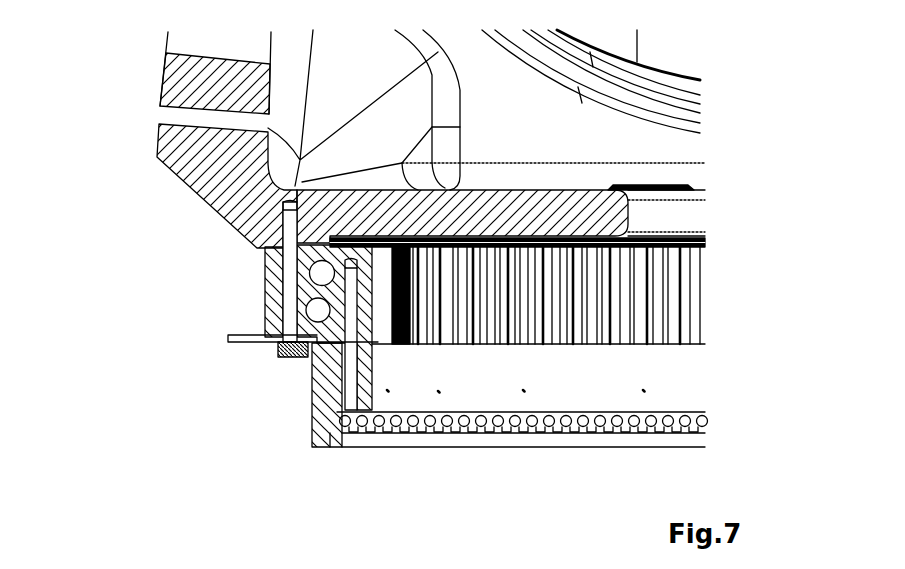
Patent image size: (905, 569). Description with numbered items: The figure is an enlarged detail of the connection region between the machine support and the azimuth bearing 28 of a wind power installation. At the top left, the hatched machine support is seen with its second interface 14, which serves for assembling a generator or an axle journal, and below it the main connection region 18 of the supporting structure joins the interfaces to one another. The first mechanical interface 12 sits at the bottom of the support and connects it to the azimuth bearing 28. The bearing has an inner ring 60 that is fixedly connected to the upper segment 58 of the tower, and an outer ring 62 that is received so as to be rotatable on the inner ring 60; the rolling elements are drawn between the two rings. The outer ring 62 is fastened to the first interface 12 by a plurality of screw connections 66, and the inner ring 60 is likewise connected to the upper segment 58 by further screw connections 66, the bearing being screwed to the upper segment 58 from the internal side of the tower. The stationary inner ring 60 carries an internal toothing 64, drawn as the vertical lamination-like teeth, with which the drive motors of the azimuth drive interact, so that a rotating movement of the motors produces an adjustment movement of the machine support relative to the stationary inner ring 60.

The first mechanical interface 12 is at (546, 235).
The second interface 14 is at (162, 80).
The main connection region 18 is at (233, 188).
The azimuth bearing 28 is at (271, 357).
The upper segment 58 is at (315, 382).
The inner ring 60 is at (323, 333).
The outer ring 62 is at (267, 283).
The internal toothing 64 is at (503, 313).
The screw connections 66 is at (265, 267).